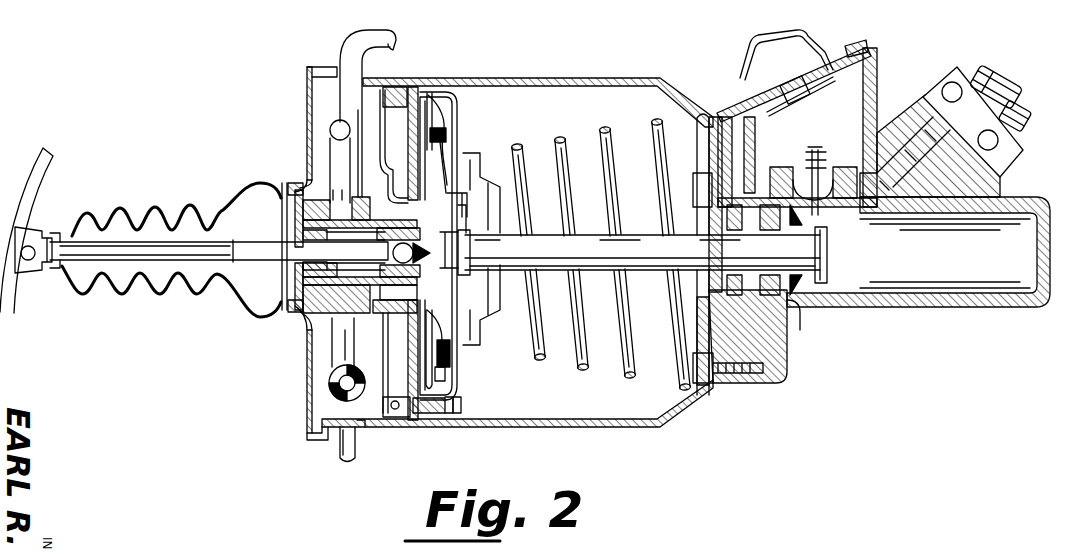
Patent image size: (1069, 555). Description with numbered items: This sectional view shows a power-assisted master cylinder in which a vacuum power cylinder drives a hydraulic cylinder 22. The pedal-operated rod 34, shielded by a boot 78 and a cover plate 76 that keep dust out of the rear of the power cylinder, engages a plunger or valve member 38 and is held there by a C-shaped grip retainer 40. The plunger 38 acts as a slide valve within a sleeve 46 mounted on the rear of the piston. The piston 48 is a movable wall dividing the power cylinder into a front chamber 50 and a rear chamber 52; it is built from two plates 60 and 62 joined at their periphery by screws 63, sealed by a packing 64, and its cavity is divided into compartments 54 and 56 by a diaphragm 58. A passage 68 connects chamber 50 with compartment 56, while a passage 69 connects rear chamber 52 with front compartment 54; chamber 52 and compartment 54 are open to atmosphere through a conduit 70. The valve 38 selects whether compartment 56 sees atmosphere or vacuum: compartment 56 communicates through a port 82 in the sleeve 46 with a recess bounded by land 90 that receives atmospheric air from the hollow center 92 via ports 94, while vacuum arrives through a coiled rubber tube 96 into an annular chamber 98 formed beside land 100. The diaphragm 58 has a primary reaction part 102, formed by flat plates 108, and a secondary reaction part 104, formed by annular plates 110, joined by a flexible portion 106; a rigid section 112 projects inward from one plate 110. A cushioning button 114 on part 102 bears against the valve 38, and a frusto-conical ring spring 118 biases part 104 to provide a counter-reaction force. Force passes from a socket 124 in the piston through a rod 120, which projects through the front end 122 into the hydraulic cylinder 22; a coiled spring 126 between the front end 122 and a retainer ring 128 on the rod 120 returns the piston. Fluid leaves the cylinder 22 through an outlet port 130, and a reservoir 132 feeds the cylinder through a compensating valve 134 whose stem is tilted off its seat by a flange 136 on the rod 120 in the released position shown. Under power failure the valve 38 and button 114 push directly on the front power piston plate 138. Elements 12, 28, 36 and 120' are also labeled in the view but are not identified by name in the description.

The housing 12 is at (610, 433).
The hydraulic cylinder 22 is at (940, 308).
The brake pedal arm 28 is at (22, 172).
The rod 34 is at (84, 262).
The clevis 36 is at (31, 246).
The plunger valve 38 is at (285, 262).
The C-shaped grip retainer 40 is at (360, 255).
The sleeve 46 is at (347, 355).
The piston 48 is at (464, 110).
The chamber 50 is at (567, 120).
The chamber 52 is at (337, 110).
The compartment 54 is at (452, 386).
The compartment 56 is at (423, 370).
The pressure responsive diaphragm 58 is at (450, 372).
The plate 60 is at (428, 420).
The plate 62 is at (450, 420).
The screws 63 is at (461, 407).
The packing 64 is at (386, 426).
The passage 68 is at (430, 95).
The passage 69 is at (384, 403).
The conduit 70 is at (352, 455).
The cover plate 76 is at (308, 350).
The boot 78 is at (142, 224).
The port 82 is at (338, 285).
The land 90 is at (403, 230).
The hollow center 92 is at (310, 251).
The ports 94 is at (384, 240).
The coiled rubber tube 96 is at (330, 147).
The annular chamber 98 is at (298, 318).
The land 100 is at (295, 222).
The primary reaction part 102 is at (445, 290).
The secondary reaction part 104 is at (455, 345).
The flexible portion 106 is at (445, 318).
The flat plates 108 is at (466, 212).
The annular rigid plates 110 is at (446, 140).
The rigid section 112 is at (448, 160).
The cushioning button 114 is at (466, 250).
The ring spring 118 is at (392, 87).
The rod 120 is at (602, 287).
The end wall 120' is at (777, 251).
The front end 122 is at (700, 300).
The socket 124 is at (505, 262).
The coiled spring 126 is at (610, 145).
The retainer ring 128 is at (490, 180).
The outlet port 130 is at (852, 215).
The reservoir 132 is at (877, 82).
The compensating valve 134 is at (794, 165).
The flange 136 is at (827, 275).
The front power piston plate 138 is at (456, 86).